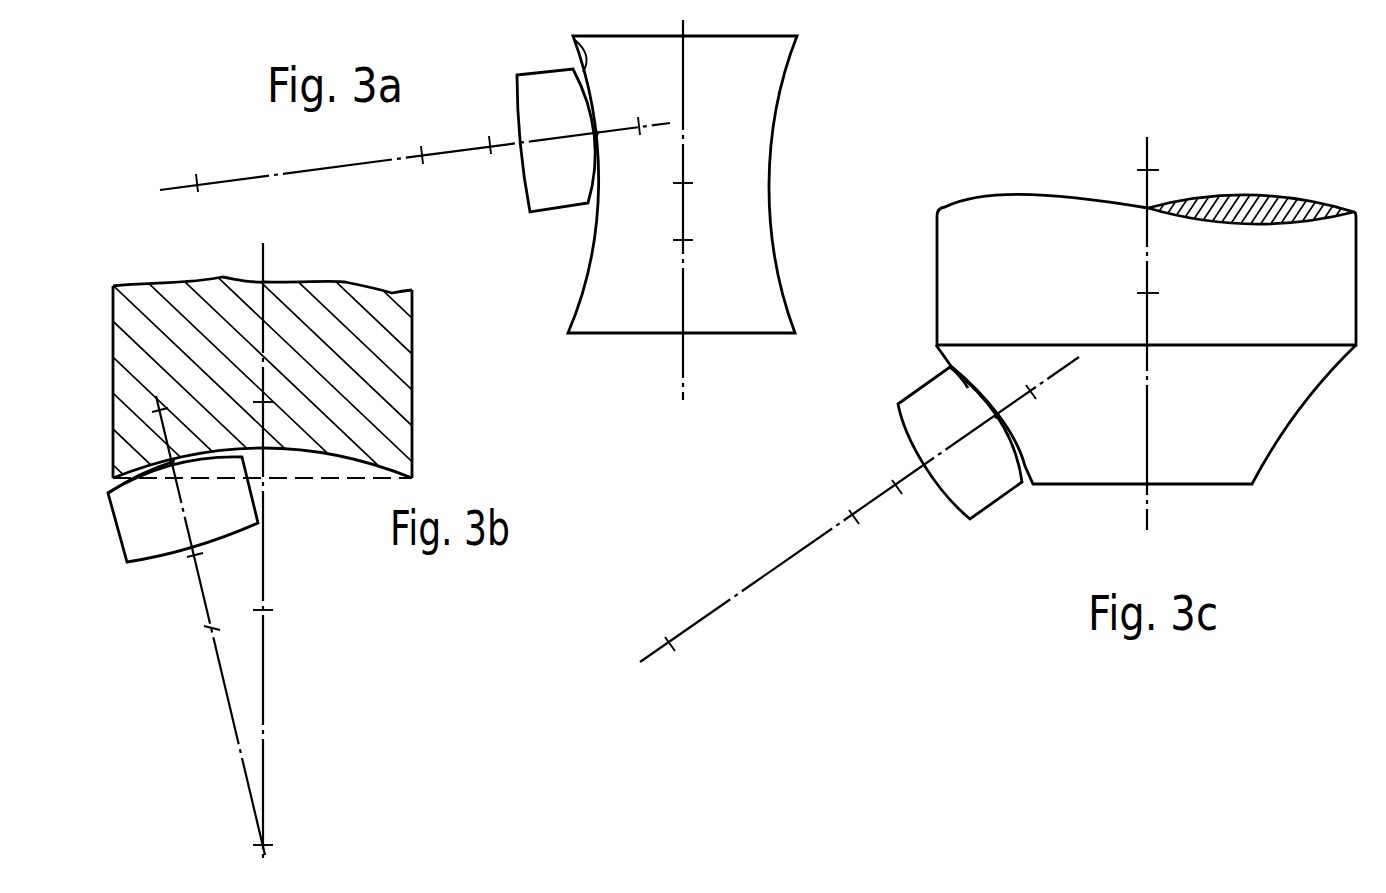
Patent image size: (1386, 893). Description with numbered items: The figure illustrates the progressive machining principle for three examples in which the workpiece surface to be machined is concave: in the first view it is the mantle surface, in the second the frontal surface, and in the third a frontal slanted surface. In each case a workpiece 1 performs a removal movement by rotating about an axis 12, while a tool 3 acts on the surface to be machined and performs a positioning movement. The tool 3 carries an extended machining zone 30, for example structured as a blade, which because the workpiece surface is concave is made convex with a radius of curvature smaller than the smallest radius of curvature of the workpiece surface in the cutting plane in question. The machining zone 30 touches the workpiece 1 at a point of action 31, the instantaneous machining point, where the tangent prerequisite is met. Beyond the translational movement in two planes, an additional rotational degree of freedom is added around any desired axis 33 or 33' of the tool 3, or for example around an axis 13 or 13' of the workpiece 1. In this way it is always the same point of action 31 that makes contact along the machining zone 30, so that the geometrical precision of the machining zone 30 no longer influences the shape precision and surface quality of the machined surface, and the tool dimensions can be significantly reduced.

In FIG. 3A, the workpiece 1 is at (612, 310).
In FIG. 3B, the workpiece 1 is at (175, 328).
In FIG. 3C, the workpiece 1 is at (1231, 421).
In FIG. 3A, the tool 3 is at (543, 188).
In FIG. 3B, the tool 3 is at (140, 520).
In FIG. 3C, the tool 3 is at (932, 415).
In FIG. 3A, the axis 12 is at (687, 383).
In FIG. 3B, the axis 12 is at (264, 748).
In FIG. 3C, the axis 12 is at (1143, 238).
In FIG. 3A, the axis of the workpiece 13 is at (651, 235).
In FIG. 3B, the axis of the workpiece 13 is at (315, 375).
In FIG. 3C, the axis of the workpiece 13 is at (1202, 284).
In FIG. 3A, the axis of the workpiece 13' is at (722, 280).
In FIG. 3B, the axis of the workpiece 13' is at (321, 588).
In FIG. 3C, the axis of the workpiece 13' is at (1122, 133).
In FIG. 3A, the machining zone 30 is at (572, 40).
In FIG. 3B, the machining zone 30 is at (117, 482).
In FIG. 3C, the machining zone 30 is at (958, 370).
In FIG. 3A, the point of action 31 is at (597, 133).
In FIG. 3B, the point of action 31 is at (170, 459).
In FIG. 3C, the point of action 31 is at (1001, 419).
In FIG. 3A, the axis of the tool 33 is at (697, 99).
In FIG. 3B, the axis of the tool 33 is at (115, 381).
In FIG. 3C, the axis of the tool 33 is at (1073, 407).
In FIG. 3A, the axis of the tool 33' is at (447, 194).
In FIG. 3B, the axis of the tool 33' is at (158, 629).
In FIG. 3C, the axis of the tool 33' is at (949, 550).